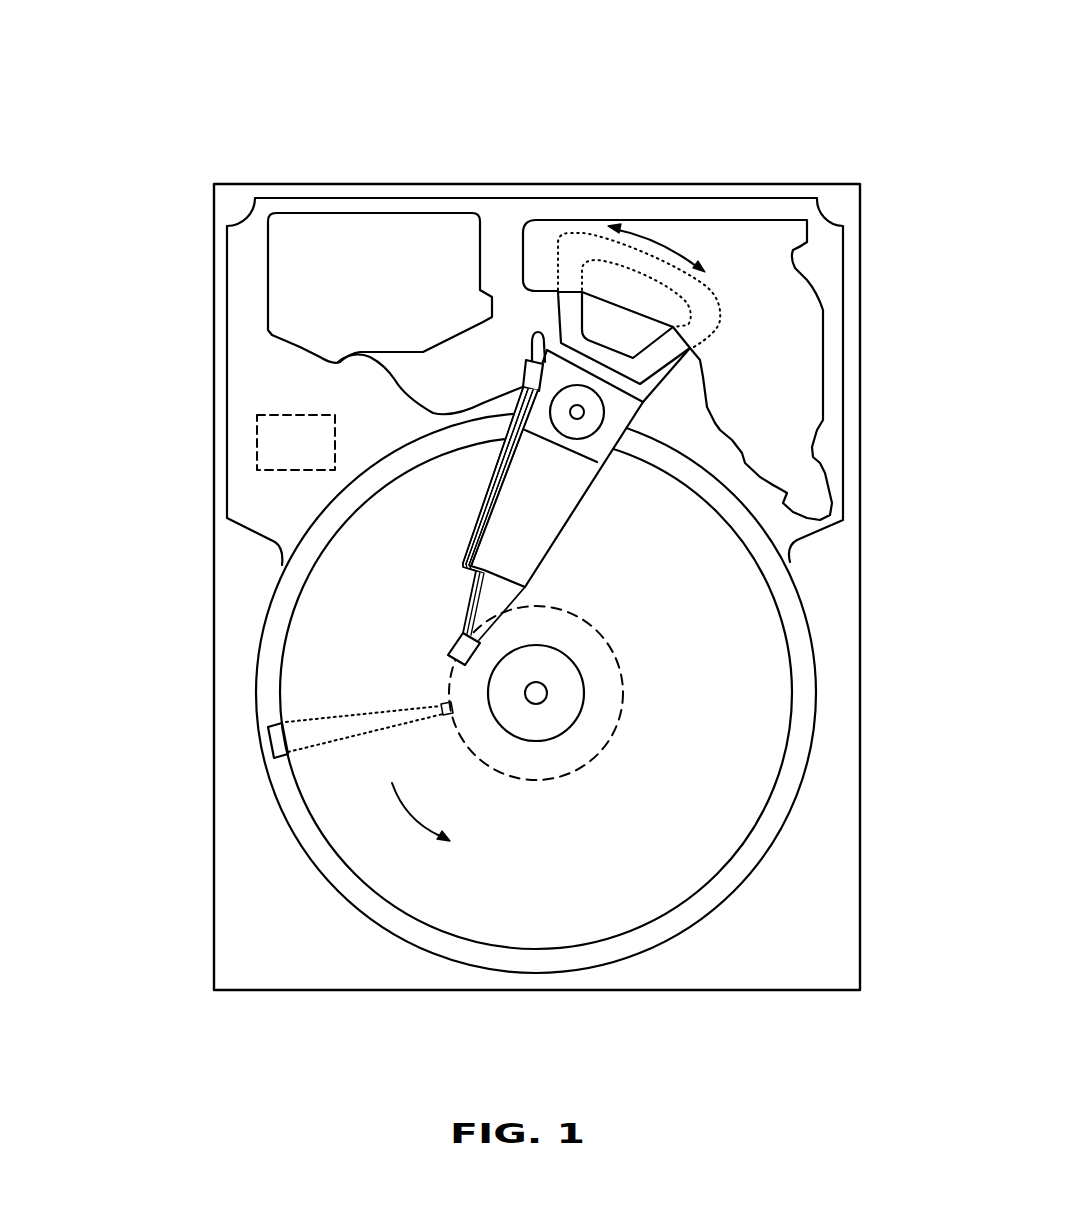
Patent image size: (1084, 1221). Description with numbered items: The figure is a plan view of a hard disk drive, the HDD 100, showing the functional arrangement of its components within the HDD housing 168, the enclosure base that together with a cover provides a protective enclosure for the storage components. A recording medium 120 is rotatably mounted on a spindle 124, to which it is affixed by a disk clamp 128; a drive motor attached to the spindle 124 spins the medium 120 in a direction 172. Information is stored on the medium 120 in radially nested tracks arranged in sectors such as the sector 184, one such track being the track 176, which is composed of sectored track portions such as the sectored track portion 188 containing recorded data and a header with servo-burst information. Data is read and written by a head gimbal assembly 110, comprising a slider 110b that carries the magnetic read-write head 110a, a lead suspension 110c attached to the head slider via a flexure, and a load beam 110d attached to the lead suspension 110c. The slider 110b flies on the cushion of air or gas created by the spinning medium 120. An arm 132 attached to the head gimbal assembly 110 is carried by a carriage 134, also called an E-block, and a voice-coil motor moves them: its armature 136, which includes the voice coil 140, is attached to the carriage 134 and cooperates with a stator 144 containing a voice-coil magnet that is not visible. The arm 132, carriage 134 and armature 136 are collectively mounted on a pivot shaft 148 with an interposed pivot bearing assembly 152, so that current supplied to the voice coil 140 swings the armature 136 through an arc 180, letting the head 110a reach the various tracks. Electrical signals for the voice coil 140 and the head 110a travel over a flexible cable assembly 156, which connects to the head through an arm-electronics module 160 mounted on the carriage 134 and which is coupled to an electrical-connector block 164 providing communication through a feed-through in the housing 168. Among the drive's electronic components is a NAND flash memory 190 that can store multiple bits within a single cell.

The hard disk drive 100 is at (140, 64).
The head gimbal assembly 110 is at (143, 495).
The magnetic read-write head 110a is at (452, 660).
The slider 110b is at (460, 636).
The lead suspension 110c is at (478, 592).
The load beam 110d is at (468, 563).
The recording medium 120 is at (722, 645).
The spindle 124 is at (538, 693).
The disk clamp 128 is at (563, 710).
The arm 132 is at (530, 528).
The carriage 134 is at (596, 446).
The armature 136 is at (556, 328).
The voice coil 140 is at (573, 303).
The stator 144 is at (790, 313).
The pivot shaft 148 is at (584, 412).
The pivot bearing assembly 152 is at (590, 423).
The flexible cable assembly 156 is at (393, 385).
The arm-electronics module 160 is at (526, 384).
The electrical-connector block 164 is at (293, 287).
The HDD housing 168 is at (845, 194).
The direction 172 is at (420, 816).
The track 176 is at (612, 653).
The arc 180 is at (648, 248).
The sector 184 is at (270, 740).
The sectored track portion 188 is at (440, 708).
The NAND flash memory 190 is at (258, 437).